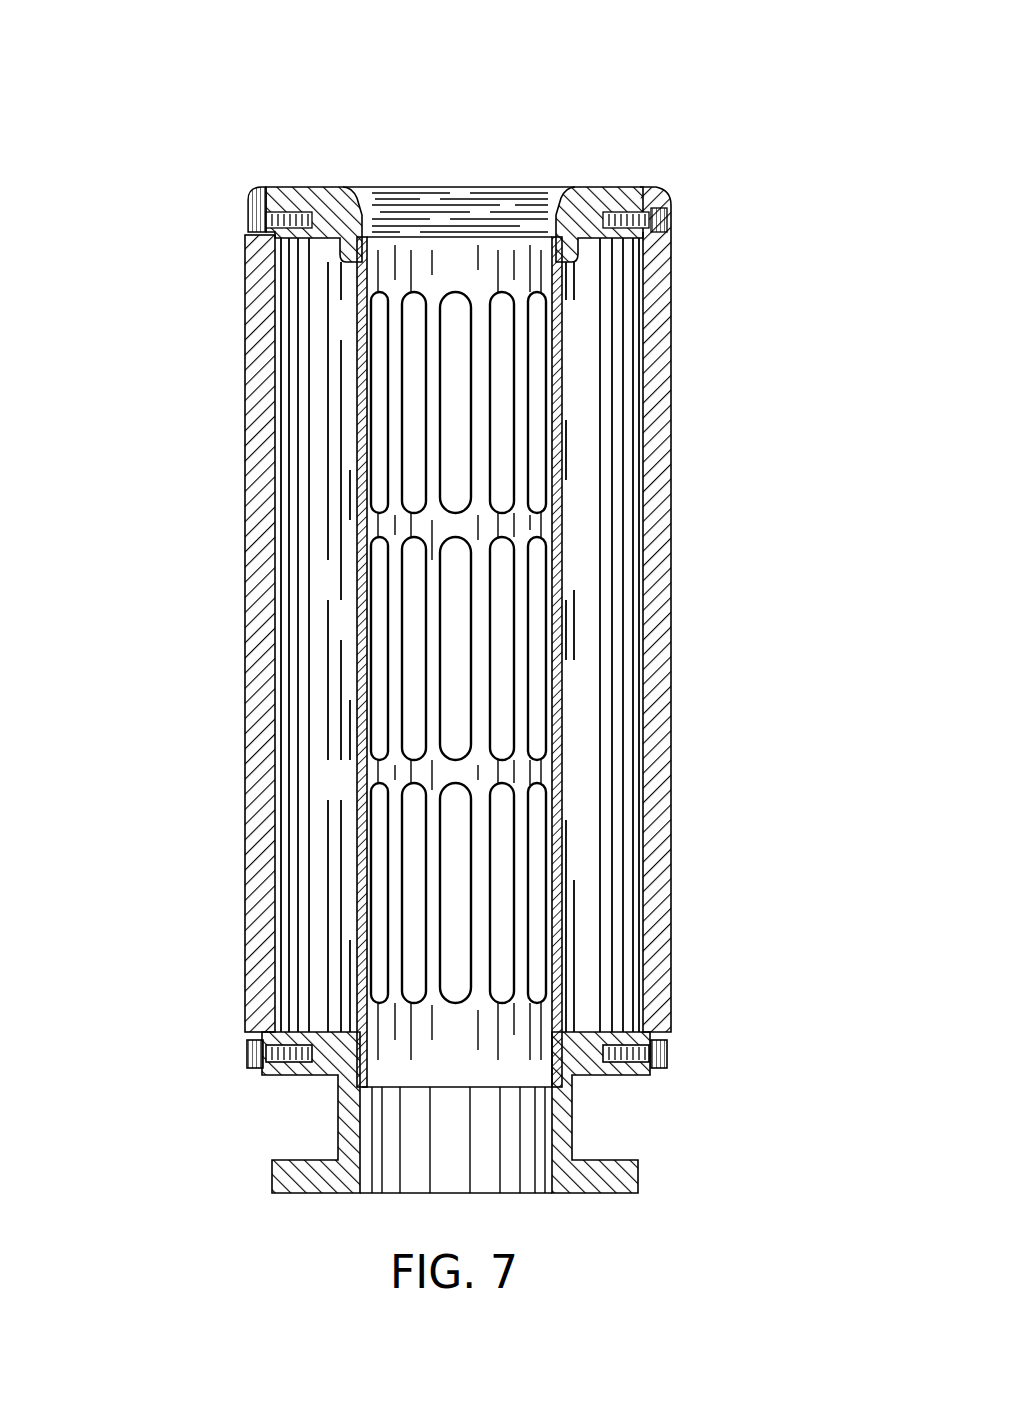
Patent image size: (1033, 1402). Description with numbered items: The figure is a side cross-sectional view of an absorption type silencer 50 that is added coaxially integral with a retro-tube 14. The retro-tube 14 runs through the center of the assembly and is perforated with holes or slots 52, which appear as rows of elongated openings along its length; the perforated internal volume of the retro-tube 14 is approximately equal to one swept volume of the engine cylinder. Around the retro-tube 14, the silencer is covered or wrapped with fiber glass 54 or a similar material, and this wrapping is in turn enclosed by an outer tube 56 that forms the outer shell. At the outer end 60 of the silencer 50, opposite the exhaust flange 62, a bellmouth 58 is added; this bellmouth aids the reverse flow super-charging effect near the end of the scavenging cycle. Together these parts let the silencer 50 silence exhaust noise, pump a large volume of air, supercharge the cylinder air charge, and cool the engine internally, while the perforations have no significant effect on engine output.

The absorption type silencer 50 is at (338, 153).
The retro-tube 14 is at (357, 847).
The holes or slots 52 is at (415, 585).
The fiber glass 54 is at (300, 330).
The outer tube 56 is at (670, 605).
The bellmouth 58 is at (560, 205).
The outer end 60 is at (578, 200).
The exhaust flange 62 is at (640, 1177).